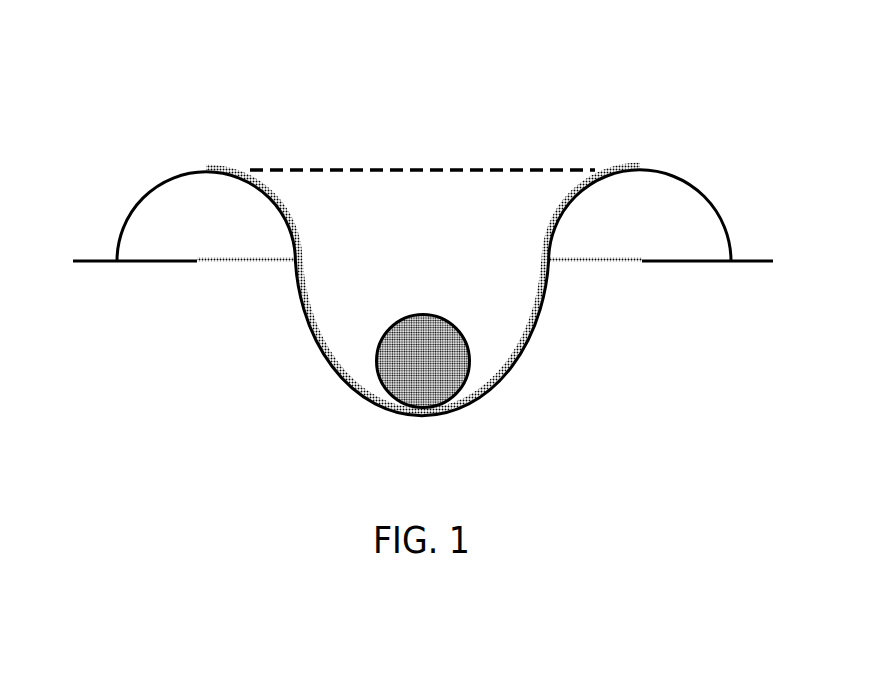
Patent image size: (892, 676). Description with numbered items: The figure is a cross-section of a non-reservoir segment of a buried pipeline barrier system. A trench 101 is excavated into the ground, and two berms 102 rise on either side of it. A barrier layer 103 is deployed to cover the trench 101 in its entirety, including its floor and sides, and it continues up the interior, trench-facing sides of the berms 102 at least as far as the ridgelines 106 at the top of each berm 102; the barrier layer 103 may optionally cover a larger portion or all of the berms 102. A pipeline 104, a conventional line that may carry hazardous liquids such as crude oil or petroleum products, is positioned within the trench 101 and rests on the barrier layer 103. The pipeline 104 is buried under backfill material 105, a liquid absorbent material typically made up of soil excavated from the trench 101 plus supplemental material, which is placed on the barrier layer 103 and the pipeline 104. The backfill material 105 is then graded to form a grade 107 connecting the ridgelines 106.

The trench 101 is at (337, 292).
The berms 102 is at (185, 215).
The barrier layer 103 is at (520, 363).
The pipeline 104 is at (420, 353).
The backfill material 105 is at (405, 217).
The ridgelines 106 is at (197, 172).
The grade 107 is at (458, 170).